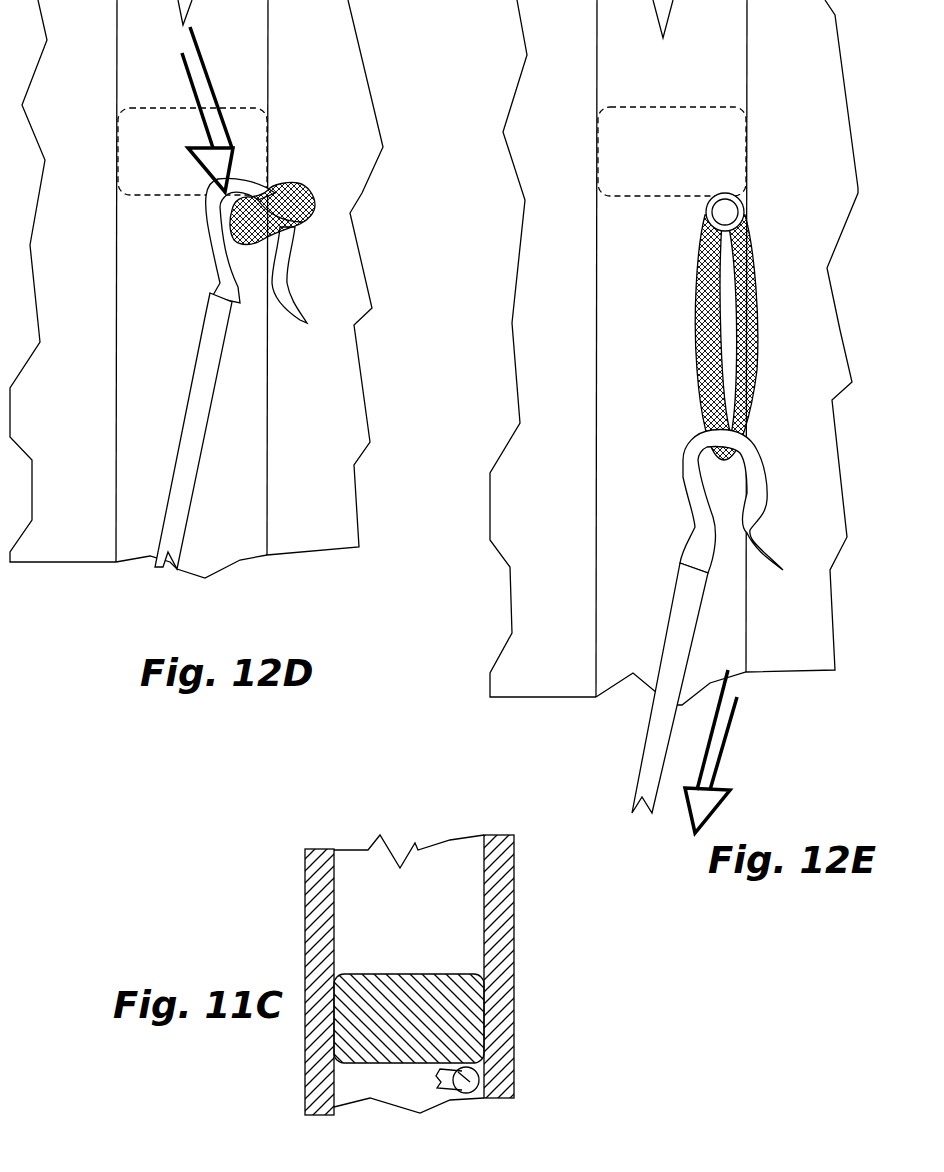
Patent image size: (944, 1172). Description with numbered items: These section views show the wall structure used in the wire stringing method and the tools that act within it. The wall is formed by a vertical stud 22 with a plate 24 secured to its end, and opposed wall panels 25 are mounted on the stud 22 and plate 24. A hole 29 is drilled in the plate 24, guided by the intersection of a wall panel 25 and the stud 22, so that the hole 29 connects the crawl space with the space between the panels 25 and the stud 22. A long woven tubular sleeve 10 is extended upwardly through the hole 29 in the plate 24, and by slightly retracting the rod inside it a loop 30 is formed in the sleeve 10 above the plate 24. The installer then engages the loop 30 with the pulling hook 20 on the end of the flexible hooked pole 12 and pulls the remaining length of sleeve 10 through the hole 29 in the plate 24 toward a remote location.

In FIG. 12E, the woven tubular sleeve 10 is at (753, 362).
In FIG. 11C, the woven tubular sleeve 10 is at (463, 1073).
In FIG. 12D, the hooked pole 12 is at (185, 483).
In FIG. 12D, the pulling hook 20 is at (283, 285).
In FIG. 11C, the vertical stud 22 is at (415, 1000).
In FIG. 12D, the plate 24 is at (148, 323).
In FIG. 12E, the plate 24 is at (630, 445).
In FIG. 11C, the wall panel 25 is at (502, 918).
In FIG. 12E, the hole 29 is at (722, 205).
In FIG. 11C, the hole 29 is at (480, 1077).
In FIG. 12D, the loop 30 is at (333, 202).
In FIG. 12E, the loop 30 is at (718, 338).